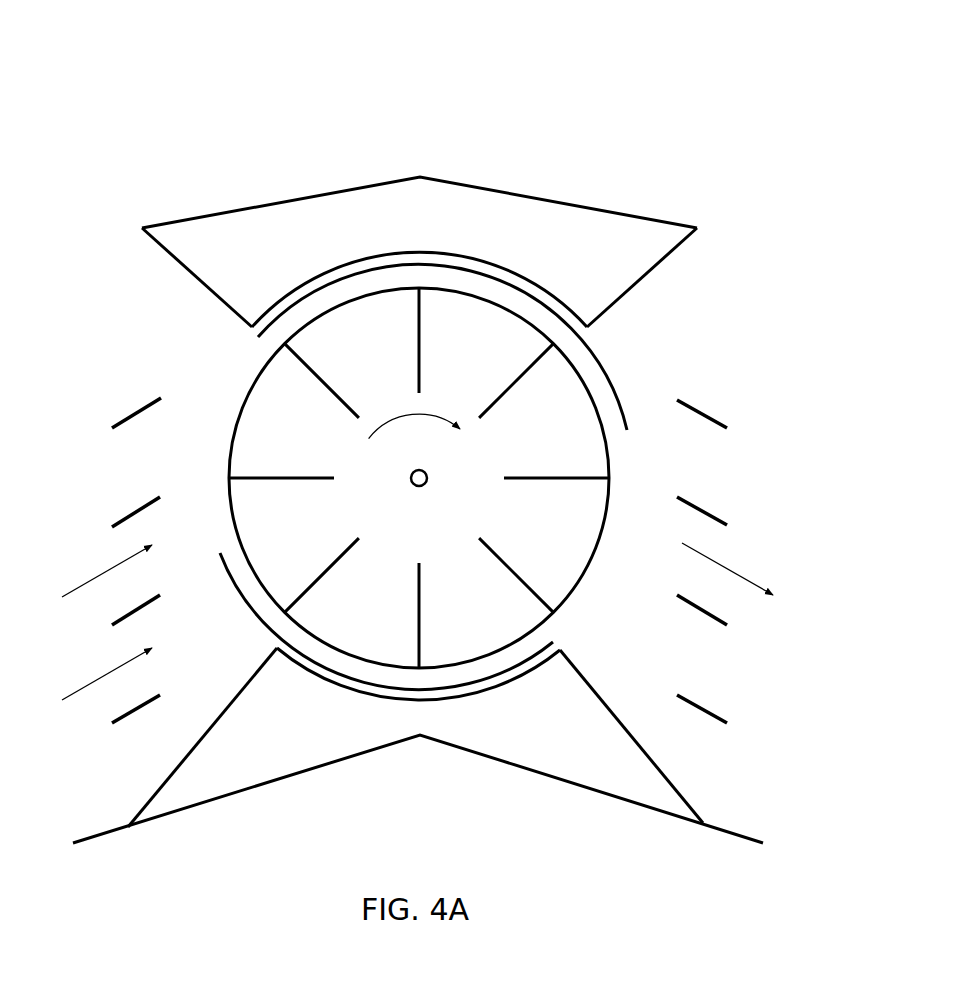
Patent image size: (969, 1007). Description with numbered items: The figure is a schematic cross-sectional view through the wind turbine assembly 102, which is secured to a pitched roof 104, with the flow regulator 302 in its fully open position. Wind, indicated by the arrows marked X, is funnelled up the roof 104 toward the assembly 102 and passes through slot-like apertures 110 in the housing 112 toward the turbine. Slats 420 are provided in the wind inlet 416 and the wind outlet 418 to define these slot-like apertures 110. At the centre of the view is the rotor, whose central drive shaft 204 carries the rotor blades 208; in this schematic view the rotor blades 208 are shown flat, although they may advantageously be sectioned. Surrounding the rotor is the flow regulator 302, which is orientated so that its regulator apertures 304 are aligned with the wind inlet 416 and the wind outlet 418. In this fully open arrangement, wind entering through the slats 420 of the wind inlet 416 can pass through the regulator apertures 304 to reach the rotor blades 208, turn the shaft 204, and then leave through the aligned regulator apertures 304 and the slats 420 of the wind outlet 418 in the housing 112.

The wind turbine assembly 102 is at (175, 78).
The pitched roof 104 is at (745, 833).
The slot-like apertures 110 is at (123, 468).
The housing 112 is at (657, 200).
The central drive shaft 204 is at (428, 472).
The rotor blades 208 is at (420, 318).
The flow regulator 302 is at (622, 397).
The regulator apertures 304 is at (218, 380).
The wind inlet 416 is at (105, 238).
The wind outlet 418 is at (720, 247).
The slats 420 is at (128, 713).